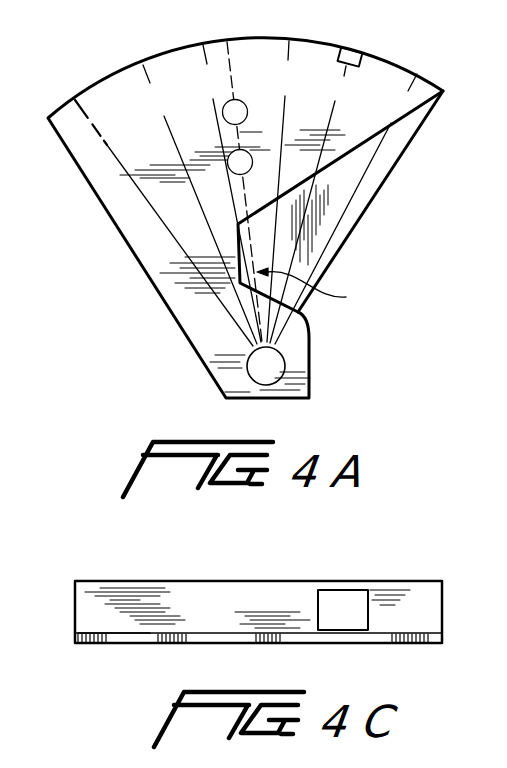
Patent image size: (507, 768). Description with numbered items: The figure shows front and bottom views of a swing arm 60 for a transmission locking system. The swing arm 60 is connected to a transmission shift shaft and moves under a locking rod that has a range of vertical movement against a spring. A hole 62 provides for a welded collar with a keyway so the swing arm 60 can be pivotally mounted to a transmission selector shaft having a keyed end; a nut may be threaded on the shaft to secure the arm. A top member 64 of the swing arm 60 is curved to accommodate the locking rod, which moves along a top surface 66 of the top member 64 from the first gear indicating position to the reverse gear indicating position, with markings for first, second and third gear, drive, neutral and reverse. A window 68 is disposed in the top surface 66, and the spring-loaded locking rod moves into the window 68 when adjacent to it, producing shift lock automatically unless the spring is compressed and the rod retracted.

In FIG. 4A, the swing arm 60 is at (376, 198).
In FIG. 4C, the swing arm 60 is at (407, 585).
In FIG. 4A, the hole 62 is at (286, 358).
In FIG. 4A, the top member 64 is at (112, 72).
In FIG. 4C, the top member 64 is at (130, 627).
In FIG. 4A, the top surface 66 is at (230, 42).
In FIG. 4A, the window 68 is at (362, 60).
In FIG. 4C, the window 68 is at (367, 608).